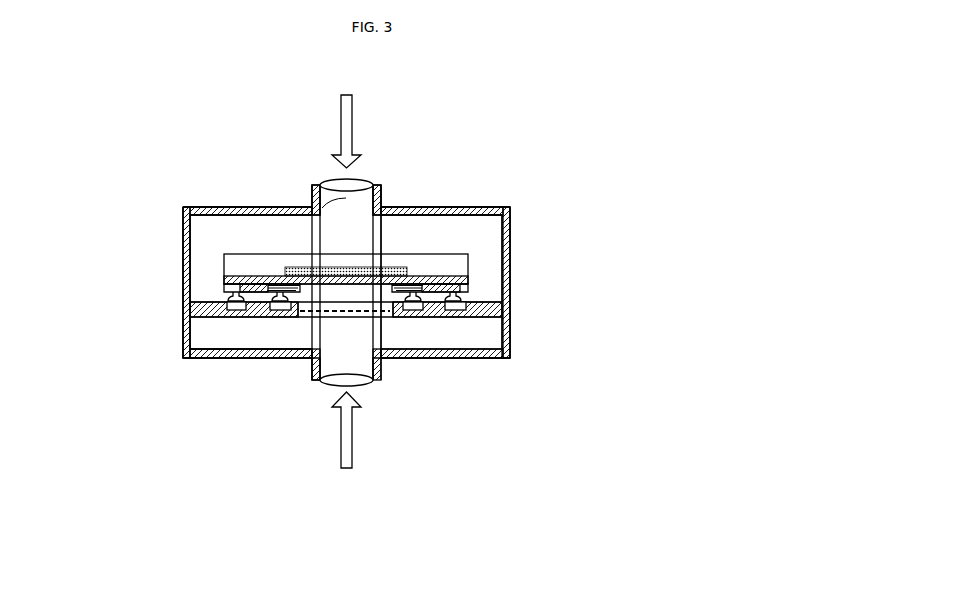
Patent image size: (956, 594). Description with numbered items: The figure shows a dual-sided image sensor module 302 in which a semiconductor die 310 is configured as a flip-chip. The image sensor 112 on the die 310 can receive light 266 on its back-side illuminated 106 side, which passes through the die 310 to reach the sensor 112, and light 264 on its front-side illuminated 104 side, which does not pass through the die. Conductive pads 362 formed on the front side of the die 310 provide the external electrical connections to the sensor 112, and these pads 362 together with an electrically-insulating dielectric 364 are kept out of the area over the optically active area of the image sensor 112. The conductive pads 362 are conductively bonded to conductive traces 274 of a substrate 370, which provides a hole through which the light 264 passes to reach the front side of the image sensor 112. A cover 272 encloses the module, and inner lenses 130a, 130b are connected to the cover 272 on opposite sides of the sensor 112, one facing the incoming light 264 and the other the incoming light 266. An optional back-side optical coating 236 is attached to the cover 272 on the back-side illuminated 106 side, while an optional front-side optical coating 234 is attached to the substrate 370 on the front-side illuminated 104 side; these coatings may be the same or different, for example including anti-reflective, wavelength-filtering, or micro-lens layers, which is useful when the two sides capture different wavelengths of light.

The dual-sided image sensor module 302 is at (224, 85).
The semiconductor die 310 is at (222, 262).
The dielectric 364 is at (222, 285).
The cover 272 is at (183, 268).
The back-side optical coating 236 is at (332, 206).
The light 266 is at (352, 122).
The inner lens 130b is at (368, 180).
The back-side illuminated side 106 is at (527, 119).
The image sensor 112 is at (368, 272).
The conductive pads 362 is at (464, 299).
The substrate 370 is at (510, 308).
The conductive traces 274 is at (455, 302).
The front-side optical coating 234 is at (340, 312).
The inner lens 130a is at (365, 386).
The light 264 is at (352, 455).
The front-side illuminated side 104 is at (535, 496).